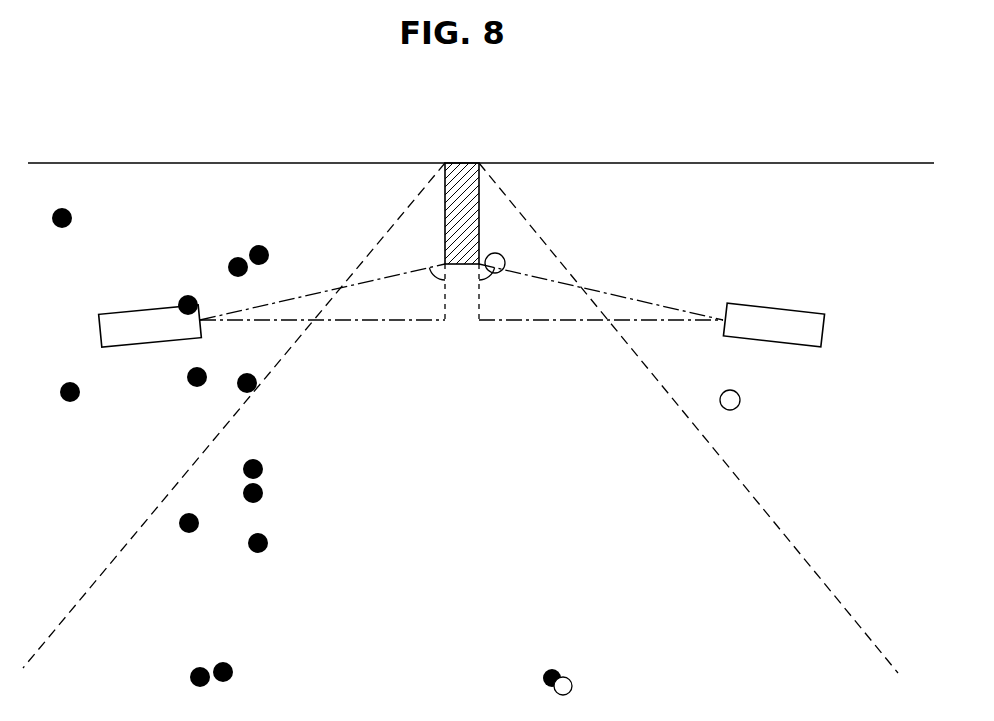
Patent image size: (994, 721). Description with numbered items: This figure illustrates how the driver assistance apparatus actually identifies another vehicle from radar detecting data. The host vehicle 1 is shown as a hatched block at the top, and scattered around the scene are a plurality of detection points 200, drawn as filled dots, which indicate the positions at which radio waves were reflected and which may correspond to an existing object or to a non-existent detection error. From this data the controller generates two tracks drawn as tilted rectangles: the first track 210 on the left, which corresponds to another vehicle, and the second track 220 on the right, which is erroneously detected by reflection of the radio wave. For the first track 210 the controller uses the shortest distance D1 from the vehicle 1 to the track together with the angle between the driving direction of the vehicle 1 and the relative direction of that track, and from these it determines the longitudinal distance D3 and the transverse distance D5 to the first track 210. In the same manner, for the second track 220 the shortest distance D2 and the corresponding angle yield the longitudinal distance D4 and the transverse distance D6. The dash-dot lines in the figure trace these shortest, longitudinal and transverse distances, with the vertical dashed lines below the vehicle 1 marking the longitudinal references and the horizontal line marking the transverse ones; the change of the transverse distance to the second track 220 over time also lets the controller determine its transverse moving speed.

The vehicle 1 is at (460, 168).
The detection points 200 is at (192, 677).
The first track 210 is at (138, 318).
The second track 220 is at (787, 318).
The shortest distance D1 is at (326, 287).
The shortest distance D2 is at (595, 288).
The longitudinal distance D3 is at (445, 303).
The longitudinal distance D4 is at (479, 303).
The transverse distance D5 is at (333, 323).
The transverse distance D6 is at (587, 322).